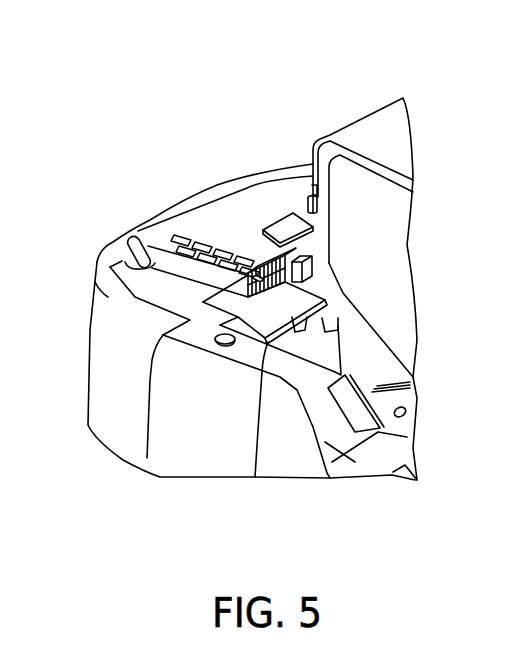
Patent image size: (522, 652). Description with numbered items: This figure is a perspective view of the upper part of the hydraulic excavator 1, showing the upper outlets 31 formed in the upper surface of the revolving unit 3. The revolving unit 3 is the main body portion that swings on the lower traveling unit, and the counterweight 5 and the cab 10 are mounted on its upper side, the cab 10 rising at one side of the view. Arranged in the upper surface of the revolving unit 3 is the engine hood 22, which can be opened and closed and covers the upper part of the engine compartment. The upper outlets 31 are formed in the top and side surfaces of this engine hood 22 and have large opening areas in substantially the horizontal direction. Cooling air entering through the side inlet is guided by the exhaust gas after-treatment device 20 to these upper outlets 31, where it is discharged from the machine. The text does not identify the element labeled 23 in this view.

The hydraulic excavator 1 is at (121, 57).
The revolving unit 3 is at (110, 408).
The counterweight 5 is at (178, 213).
The cab 10 is at (341, 120).
The exhaust gas after-treatment device 20 is at (124, 243).
The engine hood 22 is at (248, 196).
The knob 23 is at (137, 237).
The upper outlets 31 is at (212, 230).